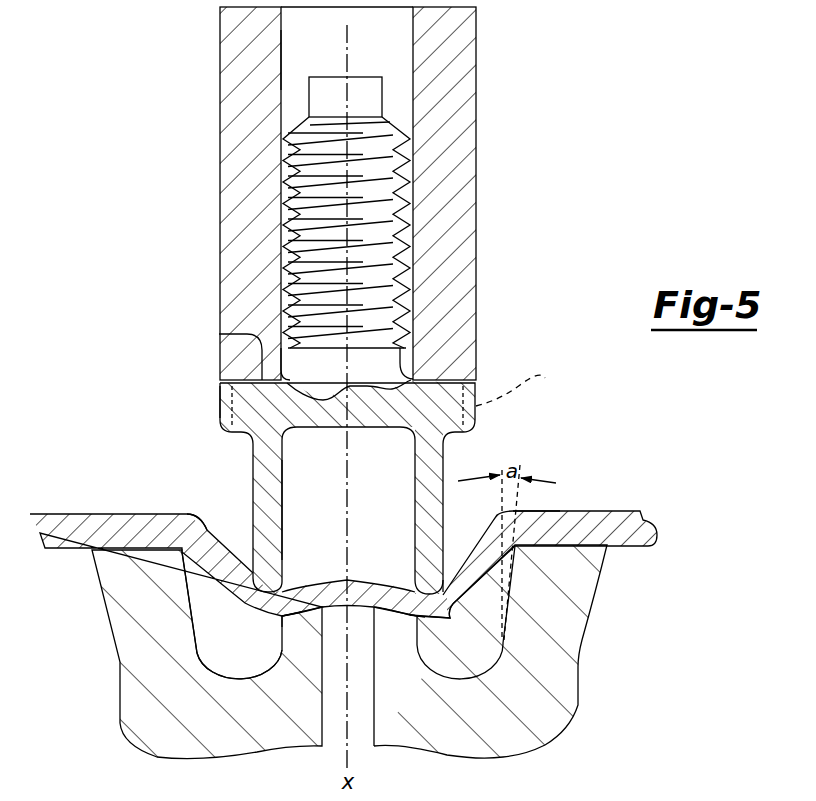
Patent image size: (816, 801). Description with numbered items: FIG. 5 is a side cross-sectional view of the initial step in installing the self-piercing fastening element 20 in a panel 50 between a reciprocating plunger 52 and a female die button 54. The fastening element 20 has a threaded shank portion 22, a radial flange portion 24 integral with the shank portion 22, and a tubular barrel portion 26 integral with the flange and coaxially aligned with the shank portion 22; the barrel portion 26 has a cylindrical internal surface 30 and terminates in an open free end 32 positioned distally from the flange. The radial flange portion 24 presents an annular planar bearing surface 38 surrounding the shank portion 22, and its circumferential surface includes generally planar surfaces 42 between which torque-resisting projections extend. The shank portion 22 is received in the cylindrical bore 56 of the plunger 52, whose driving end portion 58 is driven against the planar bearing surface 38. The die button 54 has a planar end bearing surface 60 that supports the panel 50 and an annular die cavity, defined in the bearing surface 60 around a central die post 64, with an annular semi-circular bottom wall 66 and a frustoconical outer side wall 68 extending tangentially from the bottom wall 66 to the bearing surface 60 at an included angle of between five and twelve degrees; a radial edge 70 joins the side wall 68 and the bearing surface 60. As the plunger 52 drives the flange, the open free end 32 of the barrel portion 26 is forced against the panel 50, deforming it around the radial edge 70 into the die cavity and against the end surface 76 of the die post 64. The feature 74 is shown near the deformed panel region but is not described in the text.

The fastening element 20 is at (354, 502).
The threaded shank portion 22 is at (383, 132).
The radial flange portion 24 is at (216, 407).
The barrel portion 26 is at (445, 460).
The cylindrical internal surface 30 is at (283, 497).
The open free end 32 is at (447, 586).
The annular planar bearing surface 38 is at (220, 335).
The generally planar surfaces 42 is at (524, 388).
The panel 50 is at (635, 523).
The reciprocating plunger 52 is at (231, 198).
The female die button 54 is at (540, 712).
The cylindrical bore 56 is at (280, 60).
The driving end portion 58 is at (220, 400).
The planar end bearing surface 60 is at (562, 540).
The central die post 64 is at (303, 613).
The annular semi-circular bottom wall 66 is at (250, 672).
The frustoconical outer side wall 68 is at (200, 603).
The radial edge 70 is at (168, 553).
The edge 74 is at (283, 612).
The end surface 76 is at (397, 590).